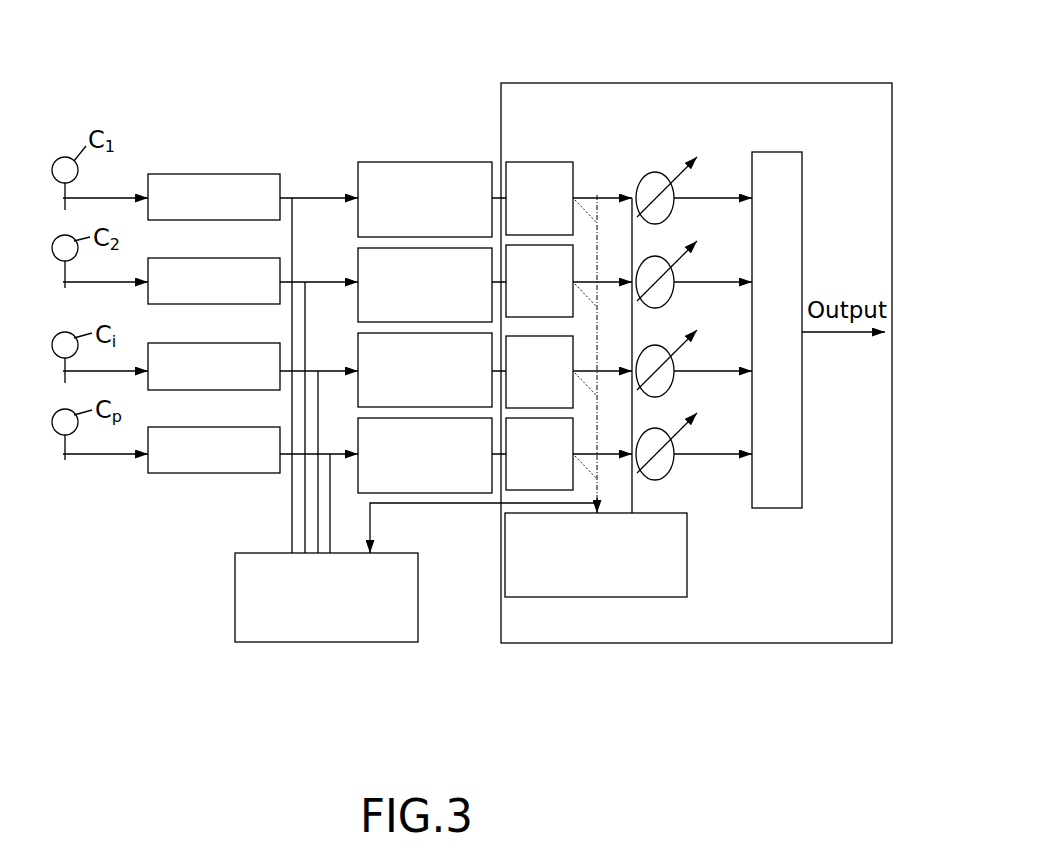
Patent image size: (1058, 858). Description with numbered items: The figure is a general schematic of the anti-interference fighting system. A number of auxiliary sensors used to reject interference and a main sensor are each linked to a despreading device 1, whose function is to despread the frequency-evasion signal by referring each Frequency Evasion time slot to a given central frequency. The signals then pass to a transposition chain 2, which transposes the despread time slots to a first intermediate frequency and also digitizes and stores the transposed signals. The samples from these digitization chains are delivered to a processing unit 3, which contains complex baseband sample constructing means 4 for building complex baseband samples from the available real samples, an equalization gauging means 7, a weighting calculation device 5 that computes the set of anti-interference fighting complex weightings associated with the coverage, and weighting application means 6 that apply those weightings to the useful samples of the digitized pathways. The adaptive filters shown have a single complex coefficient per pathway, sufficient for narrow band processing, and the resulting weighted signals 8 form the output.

The despreading device 1 is at (228, 184).
The transposition chain 2 is at (420, 172).
The processing unit 3 is at (680, 93).
The complex baseband sample constructing means 4 is at (540, 207).
The weighting calculation device 5 is at (677, 555).
The weighting application means 6 is at (667, 470).
The equalization gauging means 7 is at (308, 632).
The weighted signals 8 is at (793, 438).